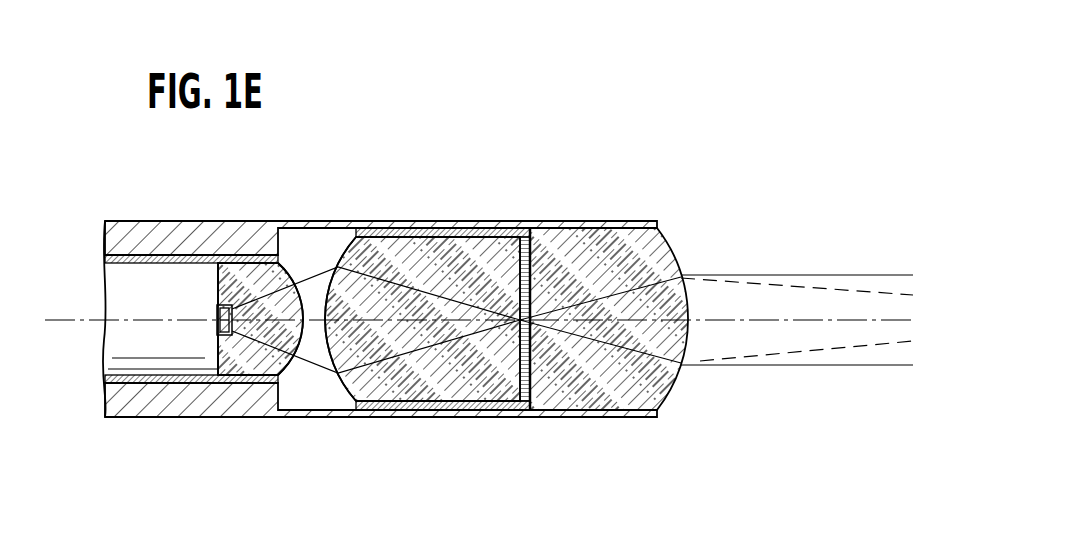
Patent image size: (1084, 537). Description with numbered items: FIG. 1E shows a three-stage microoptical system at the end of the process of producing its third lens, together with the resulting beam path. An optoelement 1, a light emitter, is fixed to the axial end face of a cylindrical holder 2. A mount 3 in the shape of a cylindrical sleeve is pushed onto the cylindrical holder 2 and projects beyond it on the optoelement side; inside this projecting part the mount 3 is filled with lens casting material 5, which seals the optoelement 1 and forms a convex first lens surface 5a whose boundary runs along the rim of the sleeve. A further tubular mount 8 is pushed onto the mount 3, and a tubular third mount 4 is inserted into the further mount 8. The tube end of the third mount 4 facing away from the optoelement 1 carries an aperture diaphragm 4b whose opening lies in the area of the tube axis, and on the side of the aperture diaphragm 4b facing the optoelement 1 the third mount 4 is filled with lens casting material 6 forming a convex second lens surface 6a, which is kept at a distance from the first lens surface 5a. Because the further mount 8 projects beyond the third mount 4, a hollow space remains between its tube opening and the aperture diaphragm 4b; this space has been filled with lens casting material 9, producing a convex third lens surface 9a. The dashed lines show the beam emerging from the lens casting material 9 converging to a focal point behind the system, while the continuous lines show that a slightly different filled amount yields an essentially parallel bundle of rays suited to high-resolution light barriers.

The optoelement 1 is at (215, 306).
The cylindrical holder 2 is at (133, 337).
The mount 3 is at (143, 267).
The third mount 4 is at (485, 232).
The aperture diaphragm 4b is at (532, 250).
The lens casting material 5 is at (238, 350).
The first lens surface 5a is at (314, 280).
The lens casting material 6 is at (418, 370).
The second lens surface 6a is at (328, 372).
The further tubular mount 8 is at (238, 237).
The lens casting material 9 is at (600, 382).
The third lens surface 9a is at (690, 342).